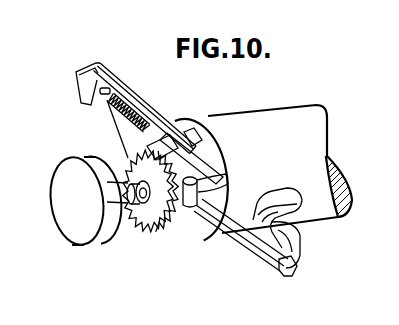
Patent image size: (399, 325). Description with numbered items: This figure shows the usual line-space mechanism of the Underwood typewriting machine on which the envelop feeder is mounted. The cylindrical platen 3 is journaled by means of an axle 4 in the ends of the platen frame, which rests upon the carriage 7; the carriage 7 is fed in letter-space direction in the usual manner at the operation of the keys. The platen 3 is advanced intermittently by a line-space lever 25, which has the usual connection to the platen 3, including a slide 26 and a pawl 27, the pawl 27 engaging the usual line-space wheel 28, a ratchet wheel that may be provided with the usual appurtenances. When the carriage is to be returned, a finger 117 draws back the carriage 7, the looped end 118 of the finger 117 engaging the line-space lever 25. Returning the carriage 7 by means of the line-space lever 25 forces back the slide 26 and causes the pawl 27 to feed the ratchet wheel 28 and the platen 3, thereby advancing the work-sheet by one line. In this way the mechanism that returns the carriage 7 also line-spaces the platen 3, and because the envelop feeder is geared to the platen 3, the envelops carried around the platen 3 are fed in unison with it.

The cylindrical platen 3 is at (267, 173).
The axle 4 is at (137, 197).
The carriage 7 is at (152, 107).
The line-space lever 25 is at (287, 270).
The slide 26 is at (203, 173).
The pawl 27 is at (204, 153).
The line-space wheel 28 is at (151, 191).
The finger 117 is at (282, 198).
The looped end 118 is at (293, 247).